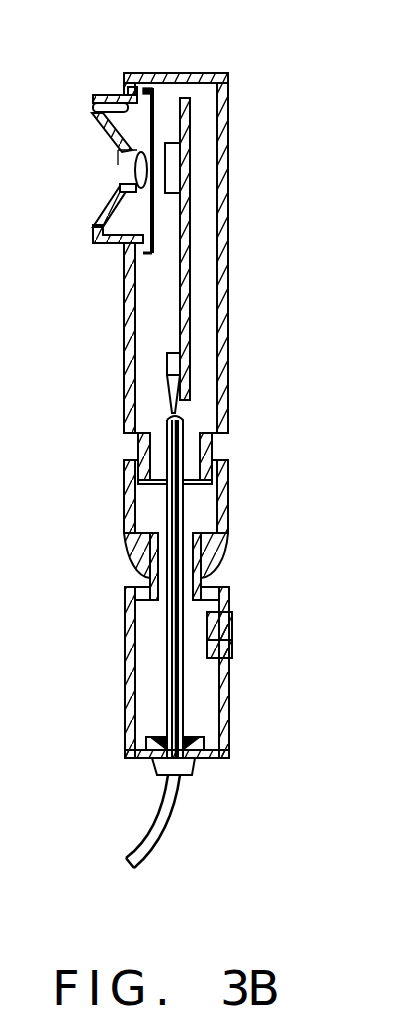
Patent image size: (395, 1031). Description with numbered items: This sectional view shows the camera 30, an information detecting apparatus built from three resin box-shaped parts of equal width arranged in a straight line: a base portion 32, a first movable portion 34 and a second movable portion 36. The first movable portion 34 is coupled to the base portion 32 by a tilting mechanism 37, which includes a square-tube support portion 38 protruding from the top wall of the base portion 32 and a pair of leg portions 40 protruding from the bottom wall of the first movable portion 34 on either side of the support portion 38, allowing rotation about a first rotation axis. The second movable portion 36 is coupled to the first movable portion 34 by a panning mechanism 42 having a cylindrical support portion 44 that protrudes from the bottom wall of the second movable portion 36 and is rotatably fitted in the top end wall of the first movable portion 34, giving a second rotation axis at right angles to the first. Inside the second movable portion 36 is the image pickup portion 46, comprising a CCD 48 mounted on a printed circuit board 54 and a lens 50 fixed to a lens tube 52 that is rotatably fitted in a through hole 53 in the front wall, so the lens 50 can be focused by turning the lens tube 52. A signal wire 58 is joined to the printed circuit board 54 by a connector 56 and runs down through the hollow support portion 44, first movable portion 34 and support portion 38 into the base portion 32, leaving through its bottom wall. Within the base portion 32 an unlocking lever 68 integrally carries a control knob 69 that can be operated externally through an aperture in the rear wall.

The camera 30 is at (250, 113).
The base portion 32 is at (130, 705).
The first movable portion 34 is at (226, 488).
The second movable portion 36 is at (228, 297).
The tilting mechanism 37 is at (118, 566).
The support portion 38 is at (218, 568).
The leg portions 40 is at (126, 562).
The panning mechanism 42 is at (117, 458).
The cylindrical support portion 44 is at (218, 452).
The image pickup portion 46 is at (107, 78).
The solid-state image pickup device (CCD) 48 is at (175, 177).
The lens 50 is at (136, 172).
The lens tube 52 is at (93, 228).
The through hole 53 is at (95, 108).
The printed circuit board 54 is at (192, 247).
The connector 56 is at (167, 365).
The signal wire 58 is at (178, 720).
The unlocking lever 68 is at (229, 652).
The control knob 69 is at (232, 628).